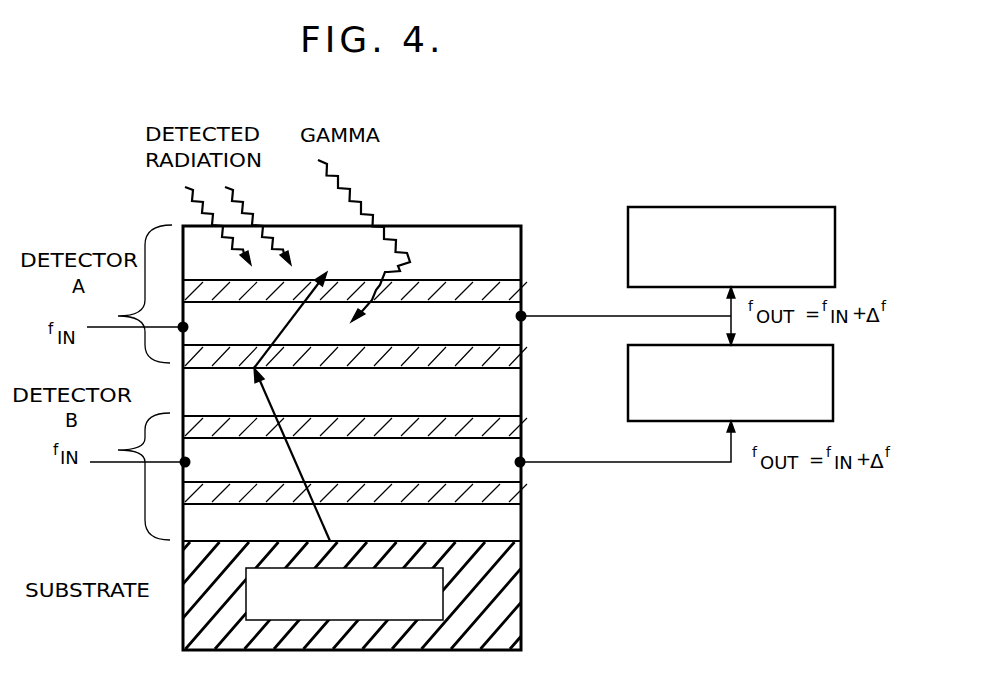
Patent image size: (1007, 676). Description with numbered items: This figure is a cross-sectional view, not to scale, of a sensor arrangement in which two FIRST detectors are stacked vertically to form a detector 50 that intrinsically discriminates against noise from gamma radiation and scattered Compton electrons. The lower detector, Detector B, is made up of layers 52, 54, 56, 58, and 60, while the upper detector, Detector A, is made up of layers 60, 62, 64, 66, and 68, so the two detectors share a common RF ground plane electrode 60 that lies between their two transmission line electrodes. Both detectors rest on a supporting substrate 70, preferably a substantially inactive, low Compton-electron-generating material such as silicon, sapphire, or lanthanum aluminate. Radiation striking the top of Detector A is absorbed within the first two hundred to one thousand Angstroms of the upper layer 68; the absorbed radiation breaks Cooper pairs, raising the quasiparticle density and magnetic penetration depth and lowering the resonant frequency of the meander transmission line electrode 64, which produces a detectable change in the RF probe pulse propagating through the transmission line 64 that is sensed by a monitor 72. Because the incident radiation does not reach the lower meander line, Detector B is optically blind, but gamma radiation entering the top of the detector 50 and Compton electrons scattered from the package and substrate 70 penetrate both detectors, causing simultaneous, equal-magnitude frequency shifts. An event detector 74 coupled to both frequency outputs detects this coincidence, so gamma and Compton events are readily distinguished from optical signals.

The detector 50 is at (533, 213).
The layer 52 is at (523, 520).
The layer 54 is at (518, 494).
The layer 56 is at (522, 450).
The layer 58 is at (513, 429).
The common RF ground plane electrode 60 is at (522, 395).
The layer 62 is at (522, 355).
The meander transmission line electrode 64 is at (507, 308).
The layer 66 is at (522, 285).
The upper layer 68 is at (522, 243).
The supporting substrate 70 is at (522, 572).
The monitor 72 is at (835, 209).
The event detector 74 is at (838, 373).